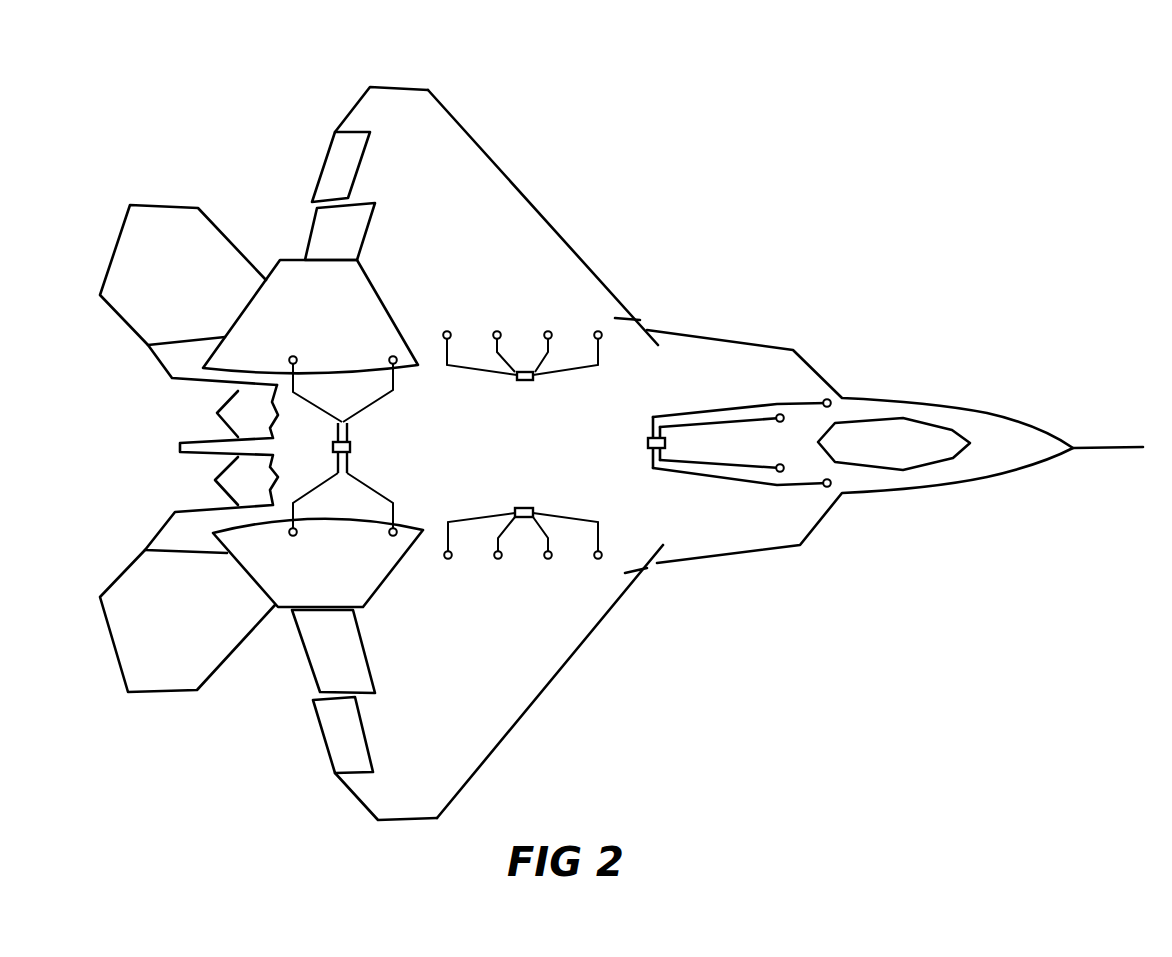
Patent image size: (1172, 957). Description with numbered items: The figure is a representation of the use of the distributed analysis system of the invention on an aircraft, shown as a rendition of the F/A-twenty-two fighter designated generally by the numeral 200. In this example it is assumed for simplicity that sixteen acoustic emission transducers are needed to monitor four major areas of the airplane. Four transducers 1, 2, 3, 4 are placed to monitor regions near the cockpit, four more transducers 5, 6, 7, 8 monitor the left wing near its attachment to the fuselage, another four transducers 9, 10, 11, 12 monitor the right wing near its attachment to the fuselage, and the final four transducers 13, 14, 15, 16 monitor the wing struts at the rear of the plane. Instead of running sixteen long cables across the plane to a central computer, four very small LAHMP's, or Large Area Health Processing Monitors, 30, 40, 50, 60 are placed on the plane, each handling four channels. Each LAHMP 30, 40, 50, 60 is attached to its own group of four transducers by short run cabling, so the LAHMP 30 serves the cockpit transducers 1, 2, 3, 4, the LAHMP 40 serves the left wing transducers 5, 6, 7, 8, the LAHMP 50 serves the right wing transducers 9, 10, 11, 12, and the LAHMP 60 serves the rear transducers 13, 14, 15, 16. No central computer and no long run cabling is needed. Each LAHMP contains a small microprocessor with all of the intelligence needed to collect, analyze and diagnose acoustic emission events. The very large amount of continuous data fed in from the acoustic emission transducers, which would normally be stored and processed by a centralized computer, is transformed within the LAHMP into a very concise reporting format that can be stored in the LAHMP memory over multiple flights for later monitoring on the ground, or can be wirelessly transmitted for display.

The rendition of the F/A-22 200 is at (815, 200).
The acoustic emission transducer 1 is at (782, 414).
The acoustic emission transducer 2 is at (829, 399).
The acoustic emission transducer 3 is at (829, 487).
The acoustic emission transducer 4 is at (782, 472).
The acoustic emission transducer 5 is at (597, 331).
The acoustic emission transducer 6 is at (546, 331).
The acoustic emission transducer 7 is at (495, 331).
The acoustic emission transducer 8 is at (445, 331).
The antenna element 9 is at (293, 356).
The antenna element 10 is at (392, 356).
The antenna element 11 is at (295, 536).
The antenna element 12 is at (392, 536).
The antenna element 13 is at (446, 559).
The antenna element 14 is at (497, 560).
The antenna element 15 is at (548, 560).
The antenna element 16 is at (597, 560).
The LAHMP (Large Area Health Processing Monitor) 30 is at (665, 443).
The LAHMP (Large Area Health Processing Monitor) 40 is at (518, 381).
The LAHMP (Large Area Health Processing Monitor) 50 is at (350, 448).
The LAHMP (Large Area Health Processing Monitor) 60 is at (525, 508).